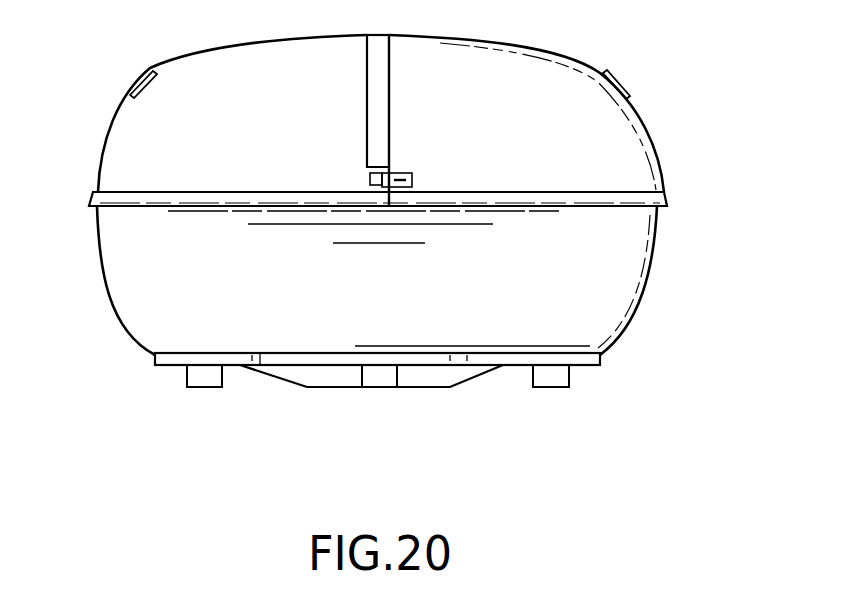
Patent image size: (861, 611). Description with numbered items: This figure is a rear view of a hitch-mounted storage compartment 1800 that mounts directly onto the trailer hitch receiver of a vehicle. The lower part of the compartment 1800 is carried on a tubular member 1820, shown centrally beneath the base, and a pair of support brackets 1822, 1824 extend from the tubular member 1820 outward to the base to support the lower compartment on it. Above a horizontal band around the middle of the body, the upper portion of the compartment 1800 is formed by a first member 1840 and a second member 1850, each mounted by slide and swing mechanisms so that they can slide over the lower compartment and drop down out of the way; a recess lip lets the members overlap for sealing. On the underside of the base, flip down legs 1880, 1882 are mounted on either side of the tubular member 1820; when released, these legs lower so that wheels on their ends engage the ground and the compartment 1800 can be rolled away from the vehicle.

The compartment 1800 is at (662, 238).
The first member 1840 is at (147, 102).
The second member 1850 is at (608, 103).
The flip down leg 1880 is at (208, 376).
The flip down leg 1882 is at (555, 376).
The tubular member 1820 is at (377, 376).
The support bracket 1822 is at (307, 388).
The support bracket 1824 is at (452, 388).